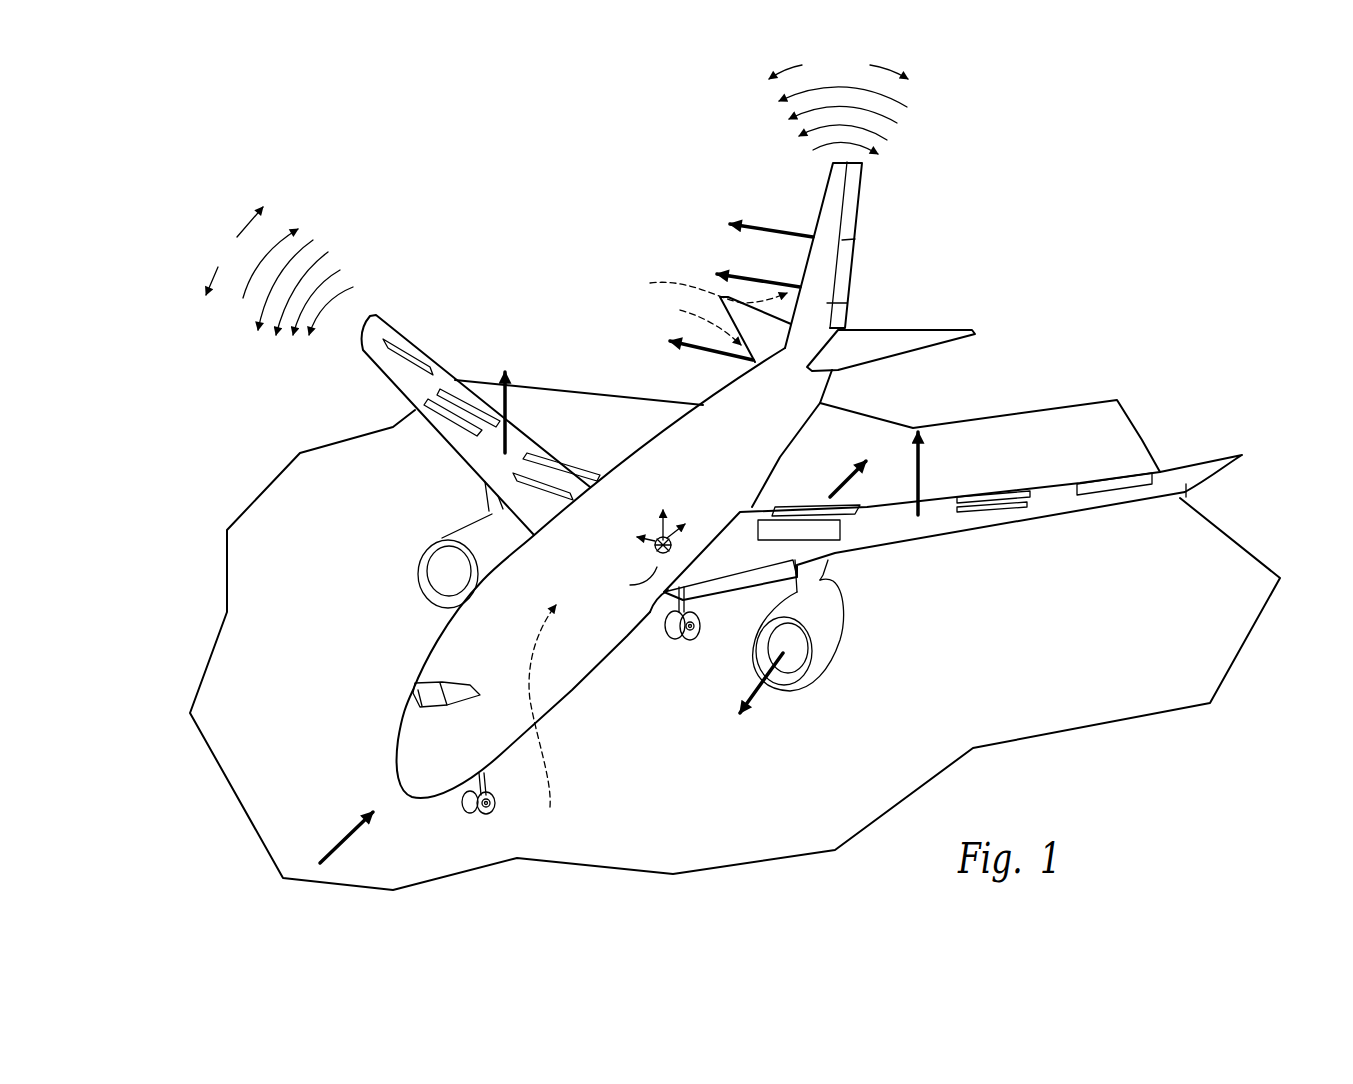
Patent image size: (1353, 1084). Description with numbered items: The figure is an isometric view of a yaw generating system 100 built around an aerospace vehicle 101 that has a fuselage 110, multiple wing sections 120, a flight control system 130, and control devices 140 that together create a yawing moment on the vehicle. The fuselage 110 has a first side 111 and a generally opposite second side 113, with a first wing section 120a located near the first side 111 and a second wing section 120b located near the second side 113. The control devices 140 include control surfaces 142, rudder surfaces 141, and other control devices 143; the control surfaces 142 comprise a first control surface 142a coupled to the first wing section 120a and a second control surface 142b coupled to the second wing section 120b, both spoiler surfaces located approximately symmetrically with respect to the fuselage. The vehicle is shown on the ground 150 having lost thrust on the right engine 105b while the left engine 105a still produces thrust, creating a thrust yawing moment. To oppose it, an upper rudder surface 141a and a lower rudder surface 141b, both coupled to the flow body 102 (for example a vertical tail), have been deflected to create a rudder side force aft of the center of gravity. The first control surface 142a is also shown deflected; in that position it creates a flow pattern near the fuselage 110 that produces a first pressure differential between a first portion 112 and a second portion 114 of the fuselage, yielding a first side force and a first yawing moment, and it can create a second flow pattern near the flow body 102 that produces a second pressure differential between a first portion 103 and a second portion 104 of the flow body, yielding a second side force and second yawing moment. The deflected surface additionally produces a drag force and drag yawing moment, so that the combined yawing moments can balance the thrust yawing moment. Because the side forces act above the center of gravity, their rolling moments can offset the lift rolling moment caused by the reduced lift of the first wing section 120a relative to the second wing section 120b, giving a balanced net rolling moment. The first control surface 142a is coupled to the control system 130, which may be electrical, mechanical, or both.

The yaw generating system 100 is at (325, 493).
The aerospace vehicle 101 is at (411, 668).
The flow body 102 is at (818, 220).
The first portion of the flow body 103 is at (803, 282).
The second portion of the flow body 104 is at (828, 303).
The left engine 105a is at (828, 630).
The right engine 105b is at (437, 533).
The fuselage 110 is at (400, 740).
The first side of the fuselage 111 is at (580, 657).
The first portion of the fuselage 112 is at (782, 388).
The second side of the fuselage 113 is at (437, 625).
The second portion of the fuselage 114 is at (752, 358).
The wing sections 120 is at (570, 302).
The first wing section 120a is at (743, 560).
The second wing section 120b is at (547, 487).
The flight control system 130 is at (546, 721).
The control devices 140 is at (999, 171).
The rudder surfaces 141 is at (890, 225).
The upper rudder surface 141a is at (853, 190).
The lower rudder surface 141b is at (847, 262).
The control surfaces 142 is at (1013, 315).
The first control surface 142a is at (795, 527).
The second control surface 142b is at (580, 413).
The other control devices 143 is at (415, 353).
The ground 150 is at (257, 602).